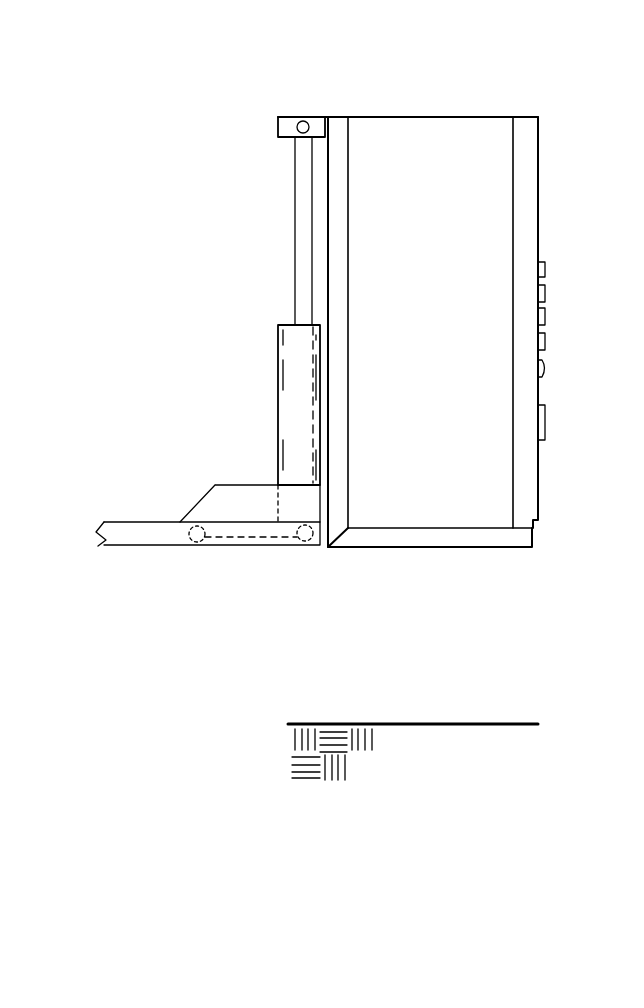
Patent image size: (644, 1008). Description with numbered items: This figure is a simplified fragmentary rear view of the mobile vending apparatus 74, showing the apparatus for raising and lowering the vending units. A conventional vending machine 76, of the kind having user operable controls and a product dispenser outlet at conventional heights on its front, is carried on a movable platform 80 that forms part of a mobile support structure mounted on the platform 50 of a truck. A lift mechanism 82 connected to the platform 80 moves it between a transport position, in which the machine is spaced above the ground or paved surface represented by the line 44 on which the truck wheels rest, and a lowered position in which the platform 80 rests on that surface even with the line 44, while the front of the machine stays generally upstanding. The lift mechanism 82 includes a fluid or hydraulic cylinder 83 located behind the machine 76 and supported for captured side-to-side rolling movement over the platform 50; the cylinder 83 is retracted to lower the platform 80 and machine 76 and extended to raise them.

The line representing ground or paved surface 44 is at (497, 724).
The platform of truck 50 is at (150, 548).
The mobile vending apparatus 74 is at (557, 103).
The vending machine 76 is at (447, 116).
The movable platform 80 is at (483, 548).
The lift mechanism 82 is at (300, 116).
The hydraulic cylinder 83 is at (278, 370).